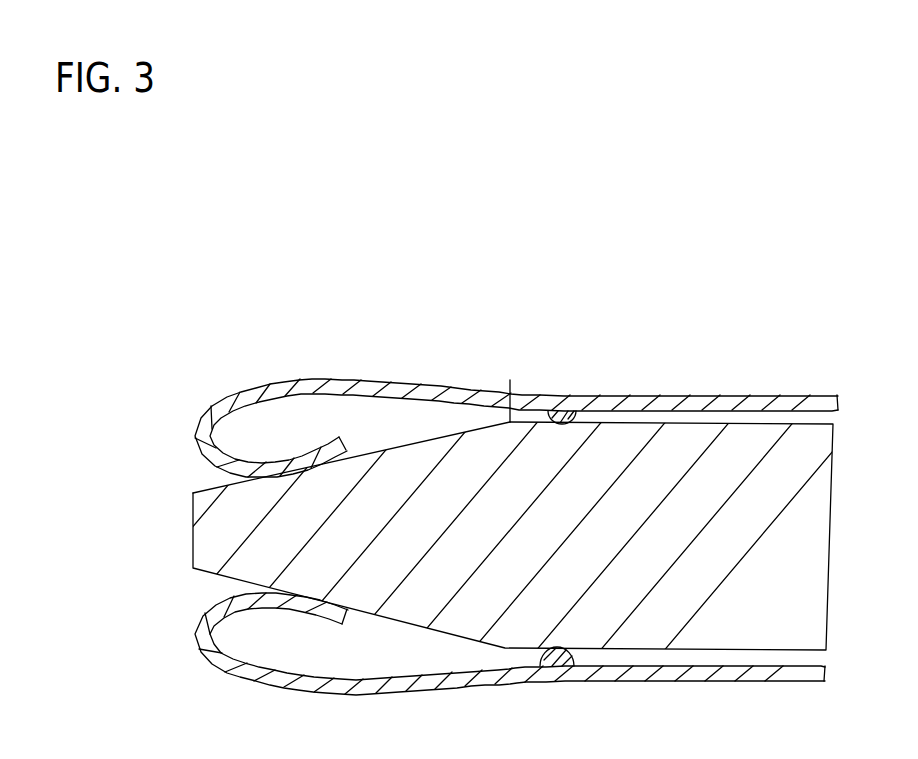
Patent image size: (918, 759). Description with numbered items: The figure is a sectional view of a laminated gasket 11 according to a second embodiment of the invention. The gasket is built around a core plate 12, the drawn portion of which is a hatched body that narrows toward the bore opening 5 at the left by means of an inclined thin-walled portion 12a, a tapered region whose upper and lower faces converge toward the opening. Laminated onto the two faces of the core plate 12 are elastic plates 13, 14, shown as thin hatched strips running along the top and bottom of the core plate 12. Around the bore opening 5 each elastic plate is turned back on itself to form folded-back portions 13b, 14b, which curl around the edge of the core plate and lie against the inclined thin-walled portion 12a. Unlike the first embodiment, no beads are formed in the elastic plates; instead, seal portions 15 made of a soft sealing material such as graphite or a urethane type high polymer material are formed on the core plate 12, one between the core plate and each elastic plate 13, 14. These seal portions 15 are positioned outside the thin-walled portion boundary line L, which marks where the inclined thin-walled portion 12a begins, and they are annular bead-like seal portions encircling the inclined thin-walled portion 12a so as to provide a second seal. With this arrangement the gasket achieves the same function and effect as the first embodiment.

The bore opening 5 is at (141, 547).
The laminated gasket 11 is at (673, 371).
The core plate 12 is at (879, 525).
The inclined thin-walled portion 12a is at (395, 447).
The elastic plate 13 is at (785, 396).
The folded-back portion 13b is at (257, 462).
The elastic plate 14 is at (733, 683).
The folded-back portion 14b is at (305, 608).
The seal portion 15 is at (562, 410).
The thin-walled portion boundary line L is at (509, 377).